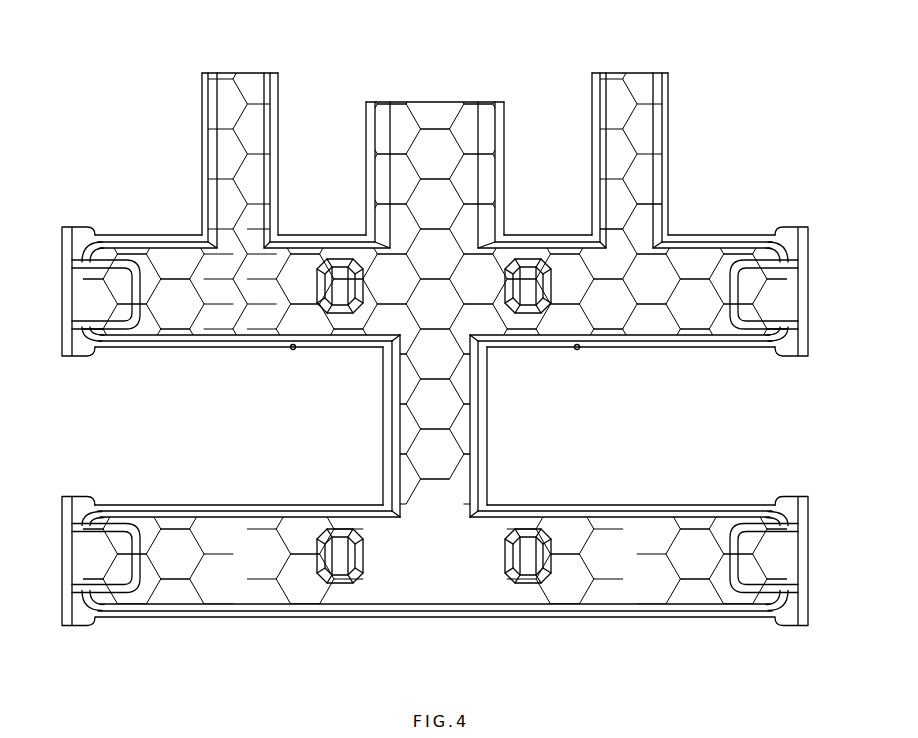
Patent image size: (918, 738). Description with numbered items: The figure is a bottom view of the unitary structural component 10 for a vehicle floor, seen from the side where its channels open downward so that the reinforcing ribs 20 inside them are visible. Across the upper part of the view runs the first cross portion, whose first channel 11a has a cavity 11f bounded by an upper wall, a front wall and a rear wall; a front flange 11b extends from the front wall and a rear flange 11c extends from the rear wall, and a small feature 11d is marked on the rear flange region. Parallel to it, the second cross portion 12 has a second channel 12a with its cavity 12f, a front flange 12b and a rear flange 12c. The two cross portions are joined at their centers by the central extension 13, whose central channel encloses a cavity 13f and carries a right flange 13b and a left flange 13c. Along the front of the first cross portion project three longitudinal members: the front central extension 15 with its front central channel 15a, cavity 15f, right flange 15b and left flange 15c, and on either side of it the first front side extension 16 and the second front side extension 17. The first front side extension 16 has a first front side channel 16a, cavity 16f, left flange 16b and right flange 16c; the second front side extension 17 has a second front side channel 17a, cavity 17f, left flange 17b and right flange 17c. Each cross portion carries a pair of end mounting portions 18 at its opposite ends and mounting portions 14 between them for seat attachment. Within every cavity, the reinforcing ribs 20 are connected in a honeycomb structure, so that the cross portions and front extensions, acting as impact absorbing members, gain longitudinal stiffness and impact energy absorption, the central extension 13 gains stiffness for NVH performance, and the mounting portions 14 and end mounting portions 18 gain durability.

The unitary structural component 10 is at (106, 67).
The first channel 11a is at (612, 320).
The front flange 11b is at (146, 242).
The rear flange 11c is at (366, 348).
The pin hole 11d is at (292, 351).
The cavity 11f is at (252, 308).
The second cross portion 12 is at (435, 552).
The second channel 12a is at (645, 585).
The front flange 12b is at (634, 508).
The rear flange 12c is at (590, 612).
The cavity 12f is at (254, 546).
The central extension 13 is at (443, 426).
The right flange 13b is at (483, 393).
The left flange 13c is at (385, 395).
The cavity 13f is at (426, 460).
The mounting portion 14 is at (330, 300).
The front central extension 15 is at (428, 145).
The front central channel 15a is at (400, 117).
The right flange 15b is at (505, 150).
The left flange 15c is at (371, 175).
The cavity 15f is at (438, 149).
The first front side extension 16 is at (629, 135).
The first front side channel 16a is at (617, 90).
The left flange 16b is at (666, 138).
The right flange 16c is at (594, 118).
The cavity 16f is at (638, 97).
The second front side extension 17 is at (245, 134).
The second front side channel 17a is at (258, 75).
The left flange 17b is at (276, 118).
The right flange 17c is at (204, 133).
The cavity 17f is at (250, 110).
The end mounting portion 18 is at (122, 330).
The reinforcing ribs 20 is at (246, 172).